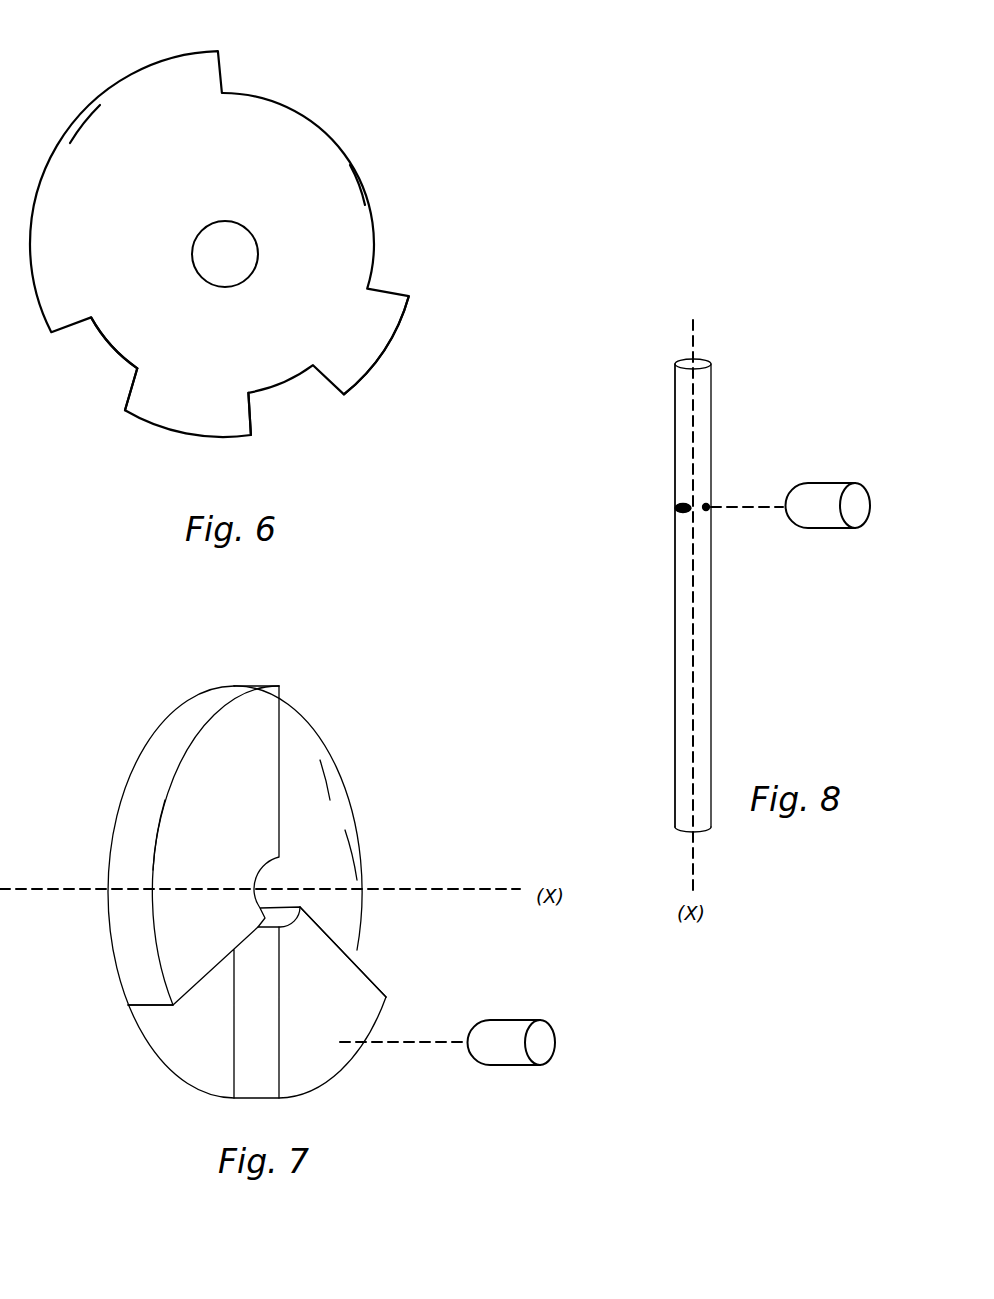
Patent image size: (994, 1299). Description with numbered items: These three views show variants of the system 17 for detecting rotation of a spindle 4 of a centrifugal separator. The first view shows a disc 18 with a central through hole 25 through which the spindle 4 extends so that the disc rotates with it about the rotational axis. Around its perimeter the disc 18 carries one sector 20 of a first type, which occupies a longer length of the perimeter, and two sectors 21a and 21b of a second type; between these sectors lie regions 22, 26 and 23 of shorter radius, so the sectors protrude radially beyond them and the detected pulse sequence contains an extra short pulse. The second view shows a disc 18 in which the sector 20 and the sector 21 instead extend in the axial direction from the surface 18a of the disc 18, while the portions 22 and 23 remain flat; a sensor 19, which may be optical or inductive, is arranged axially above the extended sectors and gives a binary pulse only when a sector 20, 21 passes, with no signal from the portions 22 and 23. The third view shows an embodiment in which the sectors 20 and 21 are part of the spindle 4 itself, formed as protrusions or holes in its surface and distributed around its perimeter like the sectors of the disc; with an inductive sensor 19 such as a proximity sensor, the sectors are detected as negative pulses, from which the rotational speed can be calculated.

In FIG. 8, the spindle 4 is at (674, 556).
In FIG. 7, the system for detecting rotation 17 is at (93, 706).
In FIG. 8, the system for detecting rotation 17 is at (630, 426).
In FIG. 6, the disc 18 is at (280, 78).
In FIG. 7, the disc 18 is at (310, 730).
In FIG. 7, the surface of the disc 18a is at (311, 782).
In FIG. 7, the sensor 19 is at (505, 1057).
In FIG. 8, the sensor 19 is at (822, 518).
In FIG. 6, the sector of the first type 20 is at (101, 117).
In FIG. 7, the sector of the first type 20 is at (132, 826).
In FIG. 8, the sector of the first type 20 is at (675, 507).
In FIG. 7, the sector of the second type 21 is at (318, 1078).
In FIG. 8, the sector of the second type 21 is at (712, 508).
In FIG. 6, the first second-type sector 21a is at (154, 407).
In FIG. 6, the second second-type sector 21b is at (375, 354).
In FIG. 6, the portion between sectors 22 is at (112, 351).
In FIG. 7, the portion between sectors 22 is at (178, 1051).
In FIG. 6, the portion between sectors 23 is at (358, 186).
In FIG. 7, the portion between sectors 23 is at (360, 850).
In FIG. 6, the through hole 25 is at (220, 243).
In FIG. 6, the region between sectors 26 is at (268, 389).